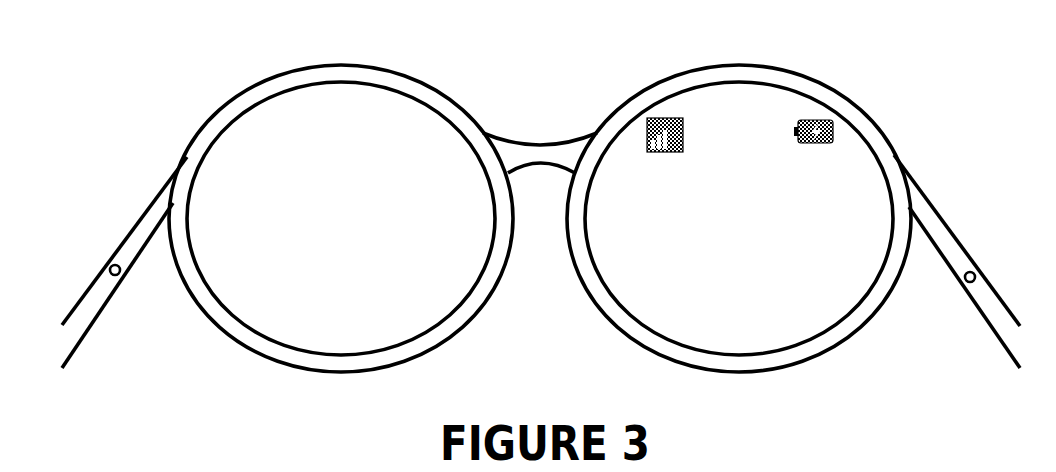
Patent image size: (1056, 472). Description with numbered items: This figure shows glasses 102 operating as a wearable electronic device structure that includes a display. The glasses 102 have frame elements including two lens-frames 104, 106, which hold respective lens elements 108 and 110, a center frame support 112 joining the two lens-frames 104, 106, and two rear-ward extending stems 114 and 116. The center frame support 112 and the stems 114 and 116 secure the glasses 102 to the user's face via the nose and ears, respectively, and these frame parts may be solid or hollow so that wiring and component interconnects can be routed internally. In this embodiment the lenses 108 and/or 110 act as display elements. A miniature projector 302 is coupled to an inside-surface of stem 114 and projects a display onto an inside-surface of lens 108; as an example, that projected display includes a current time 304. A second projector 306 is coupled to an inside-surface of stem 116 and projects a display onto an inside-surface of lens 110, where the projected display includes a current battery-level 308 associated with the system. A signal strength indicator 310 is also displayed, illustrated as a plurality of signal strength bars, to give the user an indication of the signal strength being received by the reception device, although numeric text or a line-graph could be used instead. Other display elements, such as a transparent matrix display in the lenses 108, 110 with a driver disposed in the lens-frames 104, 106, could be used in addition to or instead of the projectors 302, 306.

The glasses 102 is at (145, 124).
The lens-frame 104 is at (843, 347).
The lens-frame 106 is at (448, 343).
The lens element 108 is at (332, 337).
The lens element 110 is at (743, 335).
The center frame support 112 is at (525, 145).
The rear-ward extending stem 114 is at (933, 223).
The rear-ward extending stem 116 is at (131, 243).
The miniature projector 302 is at (113, 262).
The current time 304 is at (315, 125).
The second projector 306 is at (968, 267).
The current battery-level 308 is at (825, 145).
The signal strength indicator 310 is at (667, 152).